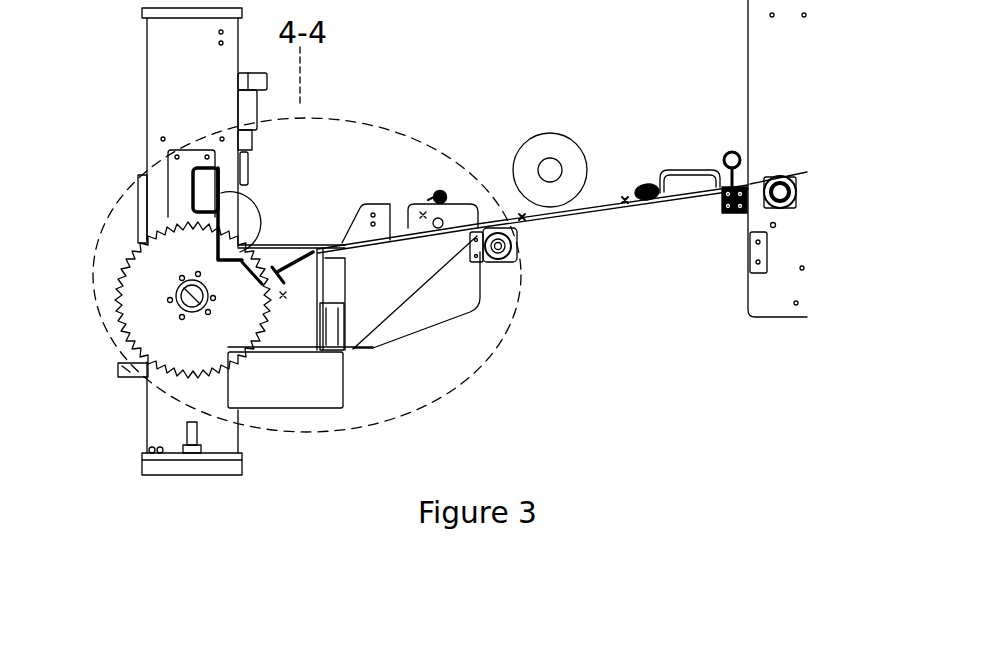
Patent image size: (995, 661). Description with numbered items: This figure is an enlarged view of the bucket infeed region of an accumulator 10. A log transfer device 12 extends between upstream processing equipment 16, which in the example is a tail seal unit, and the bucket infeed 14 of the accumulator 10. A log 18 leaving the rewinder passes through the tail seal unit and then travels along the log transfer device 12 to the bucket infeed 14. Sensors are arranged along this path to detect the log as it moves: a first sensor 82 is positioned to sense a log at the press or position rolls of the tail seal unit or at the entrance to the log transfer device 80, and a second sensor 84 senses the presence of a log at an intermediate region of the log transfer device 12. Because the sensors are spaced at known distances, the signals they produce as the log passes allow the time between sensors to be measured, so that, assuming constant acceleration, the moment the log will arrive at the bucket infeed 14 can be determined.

The accumulator 10 is at (127, 94).
The log transfer device 12 is at (604, 130).
The bucket infeed 14 is at (388, 94).
The upstream processing equipment 16 is at (781, 57).
The log 18 is at (512, 169).
The entrance to the log transfer device 80 is at (751, 186).
The first sensor 82 is at (727, 152).
The second sensor 84 is at (640, 201).